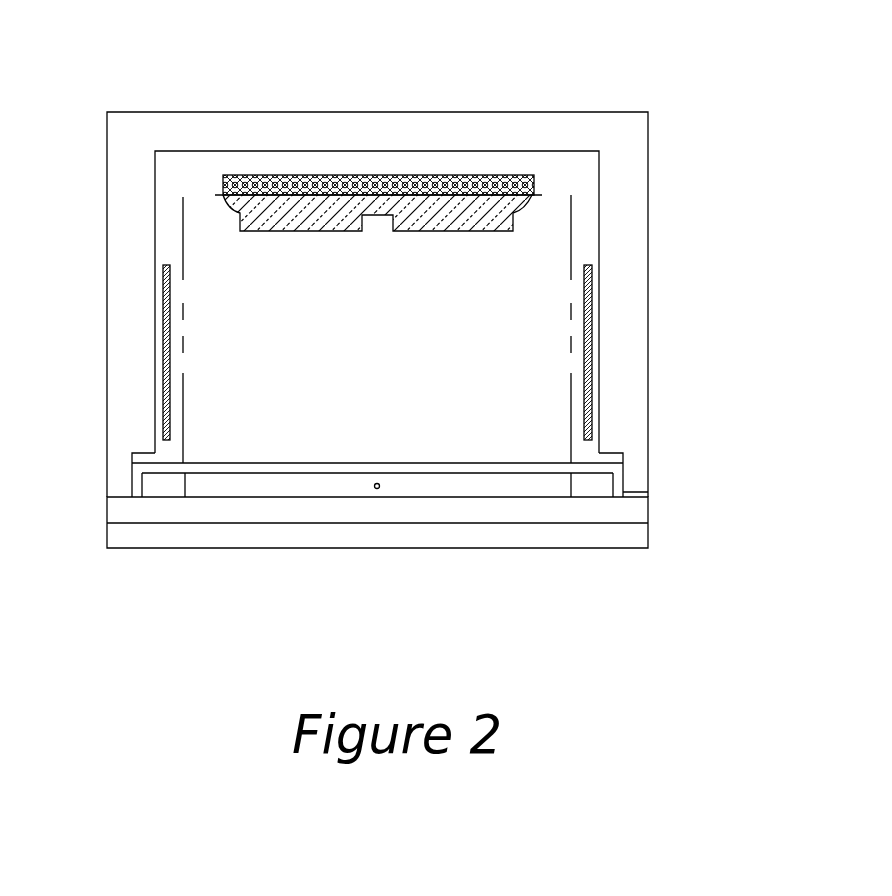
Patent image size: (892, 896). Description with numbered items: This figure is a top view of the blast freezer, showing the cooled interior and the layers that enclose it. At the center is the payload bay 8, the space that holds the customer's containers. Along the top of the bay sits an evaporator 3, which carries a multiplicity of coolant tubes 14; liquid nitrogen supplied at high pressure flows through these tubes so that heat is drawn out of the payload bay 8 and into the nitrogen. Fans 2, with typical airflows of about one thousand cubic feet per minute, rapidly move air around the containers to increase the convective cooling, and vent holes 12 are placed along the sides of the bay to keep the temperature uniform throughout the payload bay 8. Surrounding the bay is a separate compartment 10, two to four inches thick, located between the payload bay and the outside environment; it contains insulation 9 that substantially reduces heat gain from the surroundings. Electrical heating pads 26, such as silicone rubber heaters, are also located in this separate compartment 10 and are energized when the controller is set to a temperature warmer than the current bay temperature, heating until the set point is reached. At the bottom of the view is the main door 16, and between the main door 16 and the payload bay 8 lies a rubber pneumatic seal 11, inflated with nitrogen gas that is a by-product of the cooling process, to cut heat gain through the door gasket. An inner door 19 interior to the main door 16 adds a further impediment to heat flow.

The fans 2 is at (292, 210).
The evaporators 3 is at (316, 175).
The coolant tubes 14 is at (430, 175).
The insulation 9 is at (133, 178).
The separate compartment 10 is at (585, 213).
The payload bay 8 is at (447, 302).
The vent holes 12 is at (180, 232).
The electrical heating pads 26 is at (167, 277).
The rubber pneumatic seal 11 is at (132, 496).
The main door 16 is at (348, 532).
The inner door 19 is at (352, 483).